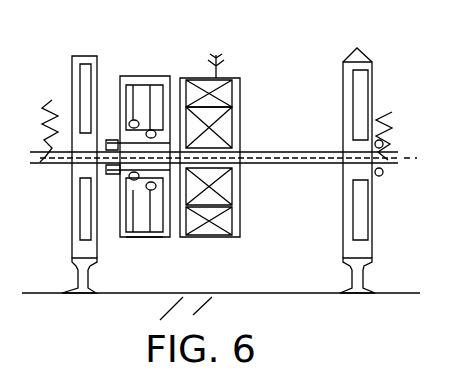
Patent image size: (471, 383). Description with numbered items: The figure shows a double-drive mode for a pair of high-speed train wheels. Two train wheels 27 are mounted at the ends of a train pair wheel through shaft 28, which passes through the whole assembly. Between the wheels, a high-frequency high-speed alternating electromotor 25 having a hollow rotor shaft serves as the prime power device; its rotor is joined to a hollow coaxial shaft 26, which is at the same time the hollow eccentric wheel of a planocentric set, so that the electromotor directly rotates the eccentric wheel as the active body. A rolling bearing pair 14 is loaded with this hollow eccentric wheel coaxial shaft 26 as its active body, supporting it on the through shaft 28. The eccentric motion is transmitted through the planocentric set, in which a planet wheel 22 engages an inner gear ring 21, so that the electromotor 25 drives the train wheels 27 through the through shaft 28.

The rolling bearing pair 14 is at (134, 122).
The inner gear ring 21 is at (157, 103).
The planet wheel 22 is at (138, 121).
The high-frequency high-speed alternating electromotor 25 is at (241, 105).
The hollow coaxial shaft 26 is at (168, 151).
The train wheel 27 is at (88, 65).
The train pair wheel through shaft 28 is at (277, 153).